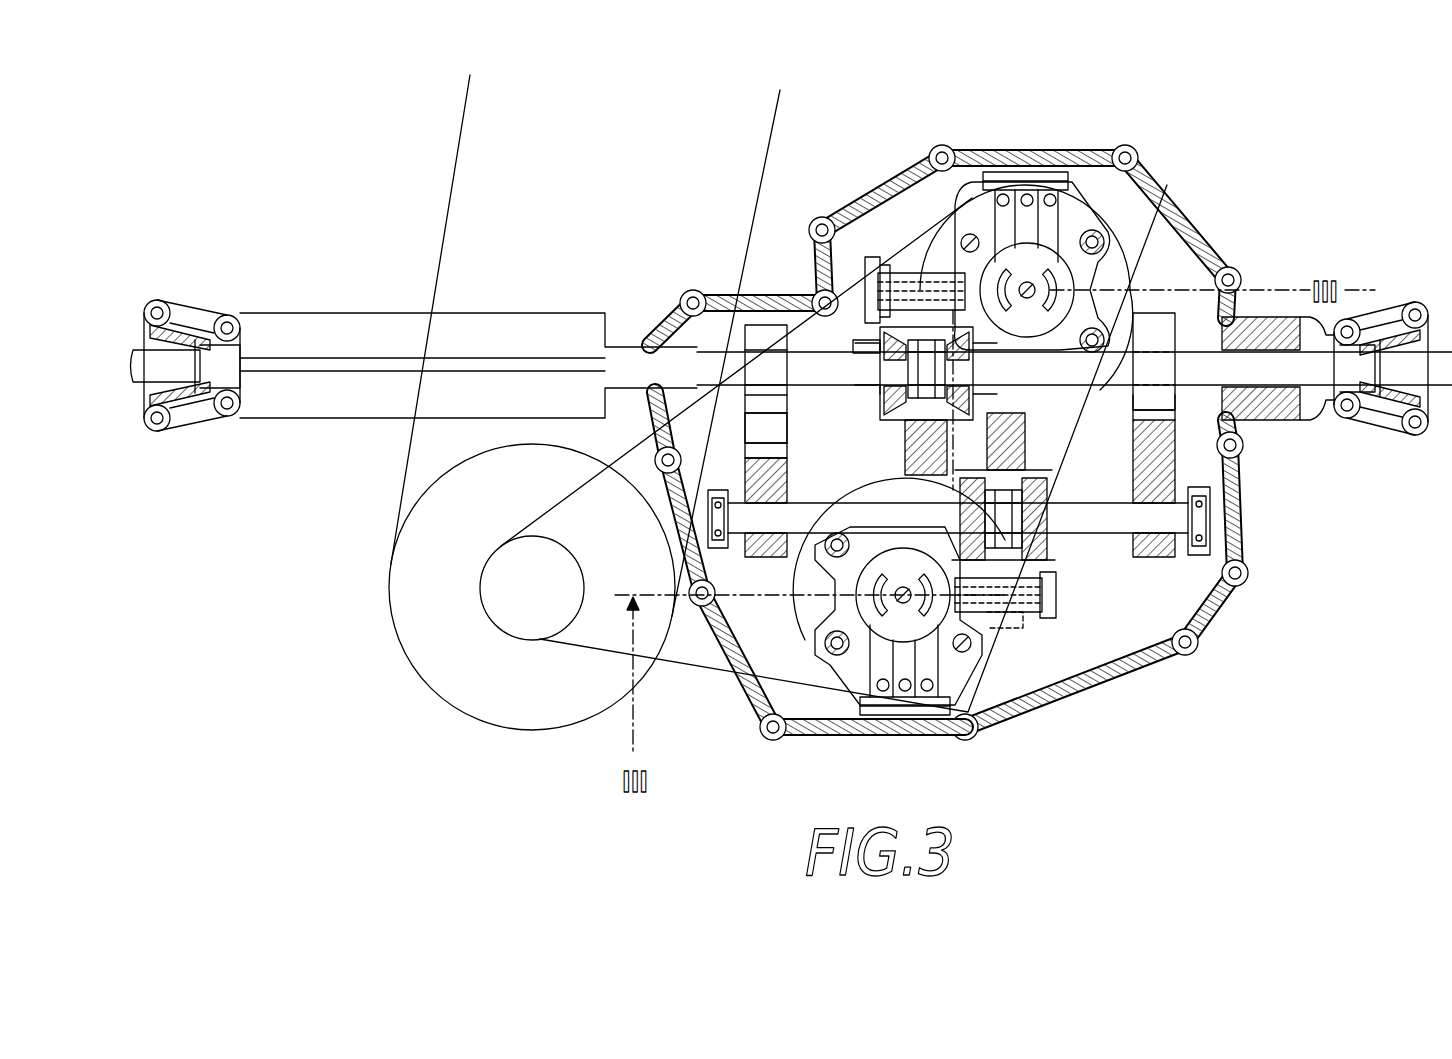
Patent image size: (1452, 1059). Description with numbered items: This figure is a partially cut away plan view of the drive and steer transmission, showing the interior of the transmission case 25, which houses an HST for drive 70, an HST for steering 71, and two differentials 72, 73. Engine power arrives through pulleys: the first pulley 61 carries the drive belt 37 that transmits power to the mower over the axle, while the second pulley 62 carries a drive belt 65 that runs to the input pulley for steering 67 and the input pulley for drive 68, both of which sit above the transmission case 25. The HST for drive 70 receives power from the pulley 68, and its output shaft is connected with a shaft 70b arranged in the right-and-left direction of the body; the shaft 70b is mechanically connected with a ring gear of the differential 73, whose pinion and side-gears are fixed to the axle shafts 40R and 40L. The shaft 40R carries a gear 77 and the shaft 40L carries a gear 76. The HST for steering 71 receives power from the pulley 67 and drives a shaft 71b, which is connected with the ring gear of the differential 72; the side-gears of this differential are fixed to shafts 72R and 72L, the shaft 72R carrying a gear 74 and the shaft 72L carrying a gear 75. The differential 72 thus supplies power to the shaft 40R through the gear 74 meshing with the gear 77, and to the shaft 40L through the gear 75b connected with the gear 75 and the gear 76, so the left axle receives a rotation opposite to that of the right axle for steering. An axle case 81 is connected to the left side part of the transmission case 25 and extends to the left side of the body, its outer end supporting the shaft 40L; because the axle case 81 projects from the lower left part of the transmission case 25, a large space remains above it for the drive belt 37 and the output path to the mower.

The transmission case 25 is at (1228, 585).
The drive belt 37 is at (468, 124).
The shaft 40L is at (173, 357).
The shaft 40R is at (1398, 367).
The first pulley 61 is at (655, 662).
The second pulley 62 is at (503, 578).
The drive belt 65 is at (712, 668).
The input pulley for steering 67 is at (790, 604).
The input pulley for drive 68 is at (905, 255).
The HST for drive 70 is at (1126, 228).
The shaft 70b is at (870, 256).
The HST for steering 71 is at (985, 680).
The shaft 71b is at (1040, 612).
The differential 72 is at (1070, 559).
The shaft 72L is at (857, 500).
The shaft 72R is at (1200, 522).
The differential 73 is at (850, 333).
The gear 74 is at (1183, 447).
The gear 75 is at (790, 470).
The gear 75b is at (770, 440).
The gear 76 is at (767, 317).
The gear 77 is at (1160, 330).
The axle case 81 is at (348, 330).